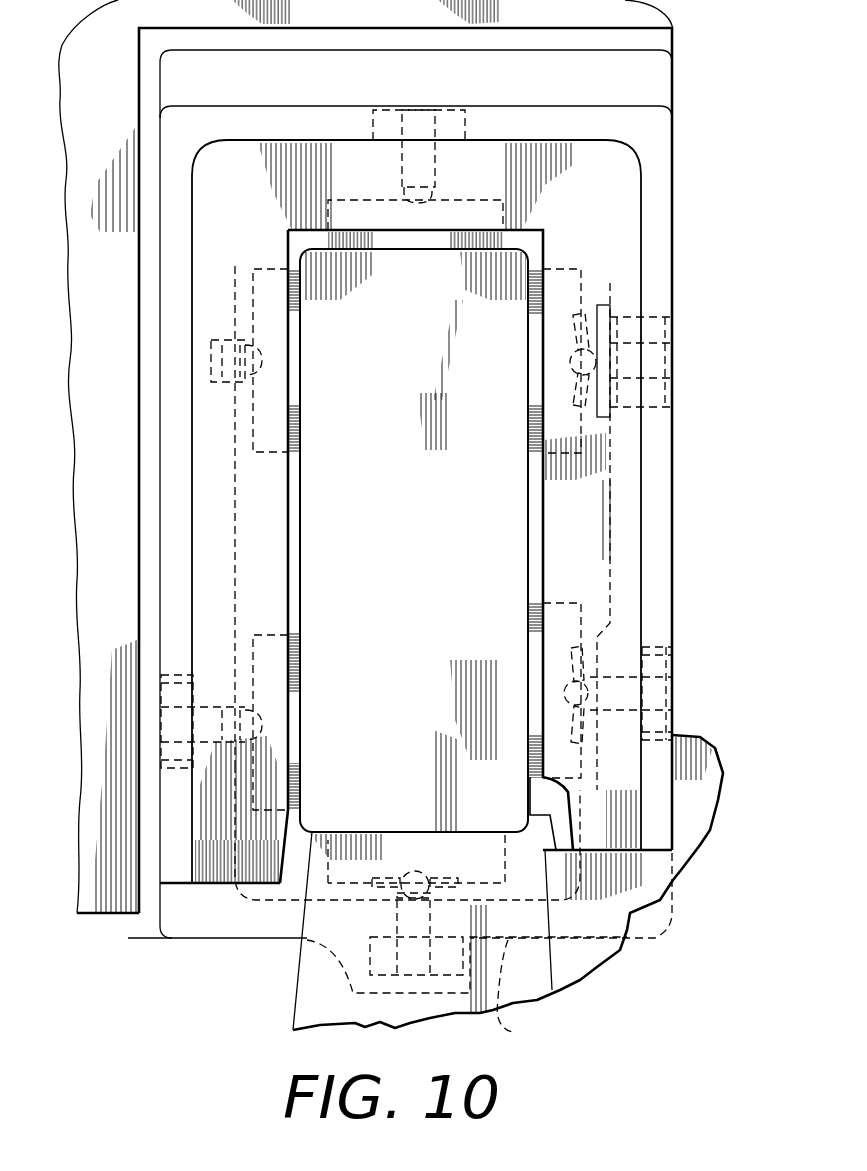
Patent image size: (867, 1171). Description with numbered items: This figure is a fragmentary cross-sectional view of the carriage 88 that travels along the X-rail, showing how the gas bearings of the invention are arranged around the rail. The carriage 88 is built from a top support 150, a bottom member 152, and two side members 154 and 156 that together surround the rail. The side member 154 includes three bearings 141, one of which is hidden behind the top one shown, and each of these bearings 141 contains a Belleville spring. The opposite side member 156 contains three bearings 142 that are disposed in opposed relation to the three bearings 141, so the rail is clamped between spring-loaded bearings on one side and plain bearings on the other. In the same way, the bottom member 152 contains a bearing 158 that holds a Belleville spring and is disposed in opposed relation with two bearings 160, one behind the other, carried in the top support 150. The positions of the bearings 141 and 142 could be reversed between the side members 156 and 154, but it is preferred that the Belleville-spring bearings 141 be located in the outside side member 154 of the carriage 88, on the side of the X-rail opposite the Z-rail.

The carriage 88 is at (672, 97).
The top support 150 is at (417, 91).
The bearings 160 is at (435, 168).
The bearings 142 is at (205, 357).
The side member 156 is at (175, 537).
The side member 154 is at (665, 520).
The bearings 141 is at (673, 365).
The bearing 158 is at (380, 848).
The bottom member 152 is at (513, 1032).